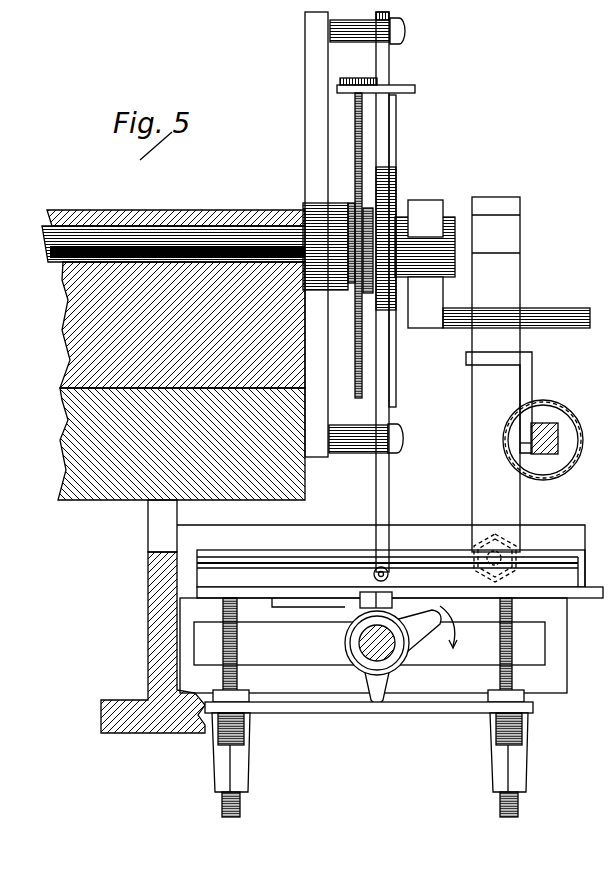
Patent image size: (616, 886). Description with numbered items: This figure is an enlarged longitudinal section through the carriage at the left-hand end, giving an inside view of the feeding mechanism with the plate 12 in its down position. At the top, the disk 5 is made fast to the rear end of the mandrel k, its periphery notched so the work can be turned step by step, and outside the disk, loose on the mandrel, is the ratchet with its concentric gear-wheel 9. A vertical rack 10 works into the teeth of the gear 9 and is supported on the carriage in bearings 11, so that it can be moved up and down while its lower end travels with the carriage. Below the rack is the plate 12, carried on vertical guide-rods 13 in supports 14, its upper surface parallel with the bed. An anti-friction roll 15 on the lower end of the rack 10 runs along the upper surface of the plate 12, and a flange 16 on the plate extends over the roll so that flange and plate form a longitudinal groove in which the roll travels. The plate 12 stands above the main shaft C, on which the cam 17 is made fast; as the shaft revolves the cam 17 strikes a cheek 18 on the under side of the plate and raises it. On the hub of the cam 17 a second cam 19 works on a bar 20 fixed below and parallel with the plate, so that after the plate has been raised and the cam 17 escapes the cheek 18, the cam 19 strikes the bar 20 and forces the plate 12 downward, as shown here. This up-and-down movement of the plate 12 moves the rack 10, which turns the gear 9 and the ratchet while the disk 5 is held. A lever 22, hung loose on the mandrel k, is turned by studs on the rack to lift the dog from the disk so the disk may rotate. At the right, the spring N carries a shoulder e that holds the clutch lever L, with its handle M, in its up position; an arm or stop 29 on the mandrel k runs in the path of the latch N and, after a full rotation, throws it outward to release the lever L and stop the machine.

The disk 5 is at (356, 126).
The gear-wheel 9 is at (339, 255).
The vertical rack 10 is at (376, 292).
The bearings 11 is at (379, 235).
The plate 12 is at (400, 596).
The vertical guide-rods 13 is at (360, 804).
The supports 14 is at (370, 752).
The anti-friction roll 15 is at (390, 574).
The flange 16 is at (387, 556).
The cam 17 is at (426, 629).
The cheek 18 is at (376, 600).
The second cam 19 is at (377, 686).
The bar 20 is at (369, 709).
The lever 22 is at (396, 251).
The arm or stop 29 is at (447, 282).
The mandrel k is at (229, 222).
The block B is at (181, 381).
The spring N is at (496, 374).
The shoulder e is at (516, 380).
The lever L is at (548, 424).
The handle M is at (570, 424).
The main shaft C is at (377, 643).